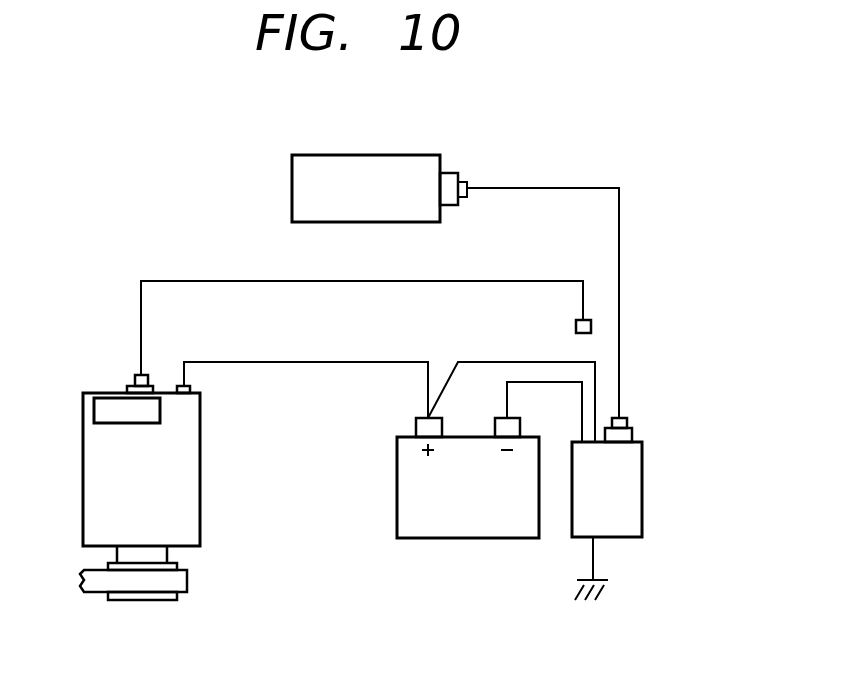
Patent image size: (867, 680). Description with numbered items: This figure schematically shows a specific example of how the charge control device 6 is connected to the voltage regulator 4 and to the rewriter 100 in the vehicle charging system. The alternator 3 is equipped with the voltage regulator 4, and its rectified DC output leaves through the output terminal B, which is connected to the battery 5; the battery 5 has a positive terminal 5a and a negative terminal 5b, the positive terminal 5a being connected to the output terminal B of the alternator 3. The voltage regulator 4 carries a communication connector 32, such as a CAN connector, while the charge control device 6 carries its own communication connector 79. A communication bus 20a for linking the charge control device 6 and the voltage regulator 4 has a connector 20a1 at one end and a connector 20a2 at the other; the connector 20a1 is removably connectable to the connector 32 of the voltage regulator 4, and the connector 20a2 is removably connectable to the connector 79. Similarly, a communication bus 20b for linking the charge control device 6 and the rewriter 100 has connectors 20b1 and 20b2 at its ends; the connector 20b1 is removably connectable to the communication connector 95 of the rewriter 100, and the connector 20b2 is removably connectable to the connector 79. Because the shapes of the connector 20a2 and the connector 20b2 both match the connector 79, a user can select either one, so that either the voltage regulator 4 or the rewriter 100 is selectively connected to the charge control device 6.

The rewriter 100 is at (363, 155).
The communication connector 95 is at (453, 173).
The communication bus 20b is at (619, 250).
The connector 20b1 is at (468, 186).
The connector 20b2 is at (627, 423).
The communication bus 20a is at (265, 281).
The connector 20a1 is at (130, 378).
The connector 20a2 is at (576, 327).
The communication connector 32 is at (157, 385).
The output terminal B is at (193, 390).
The alternator 3 is at (200, 452).
The voltage regulator 4 is at (98, 410).
The battery 5 is at (397, 475).
The positive terminal 5a is at (415, 425).
The negative terminal 5b is at (492, 425).
The charge control device 6 is at (642, 497).
The communication connector 79 is at (632, 435).